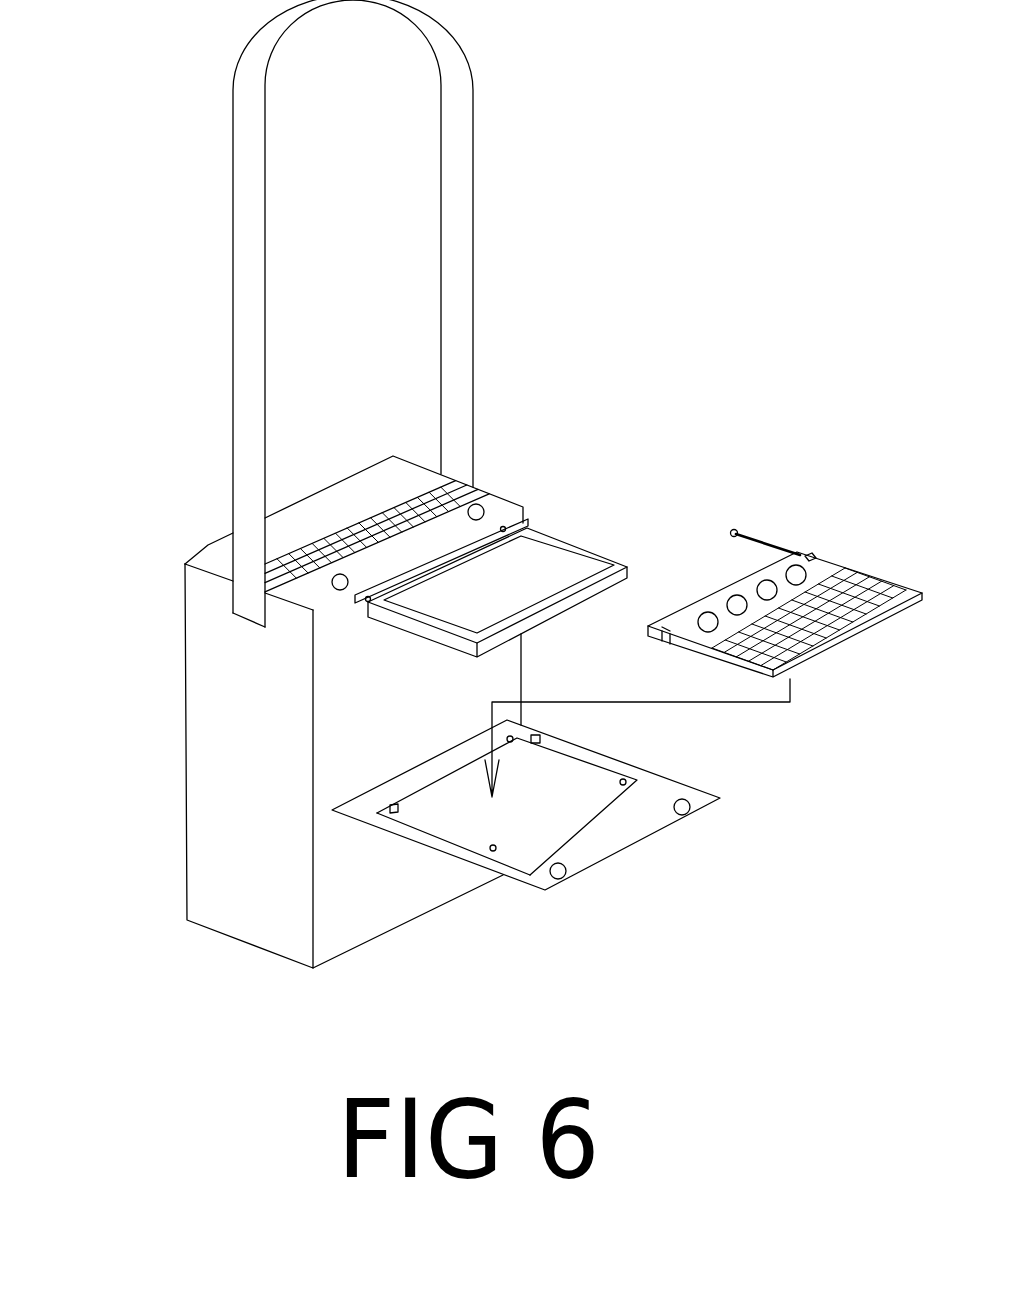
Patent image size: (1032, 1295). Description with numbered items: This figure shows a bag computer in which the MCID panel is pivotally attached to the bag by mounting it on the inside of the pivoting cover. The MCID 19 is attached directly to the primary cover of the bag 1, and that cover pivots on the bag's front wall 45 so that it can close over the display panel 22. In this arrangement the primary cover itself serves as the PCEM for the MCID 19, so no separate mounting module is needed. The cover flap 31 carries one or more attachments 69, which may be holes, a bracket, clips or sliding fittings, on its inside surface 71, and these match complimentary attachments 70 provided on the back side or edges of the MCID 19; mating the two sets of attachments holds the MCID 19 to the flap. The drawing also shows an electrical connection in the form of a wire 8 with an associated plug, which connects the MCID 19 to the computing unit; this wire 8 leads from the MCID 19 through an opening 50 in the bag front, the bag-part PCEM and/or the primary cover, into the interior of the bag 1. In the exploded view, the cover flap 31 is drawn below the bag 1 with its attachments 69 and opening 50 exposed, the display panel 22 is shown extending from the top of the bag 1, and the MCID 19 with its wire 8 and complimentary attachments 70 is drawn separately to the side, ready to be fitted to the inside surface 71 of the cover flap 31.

The bag 1 is at (207, 547).
The wire 8 is at (750, 535).
The MCID 19 is at (845, 643).
The display panel 22 is at (567, 538).
The cover flap 31 is at (633, 860).
The front wall 45 is at (340, 780).
The opening 50 is at (522, 742).
The attachments 69 is at (493, 850).
The complimentary attachments 70 is at (808, 557).
The inside surface 71 is at (510, 864).